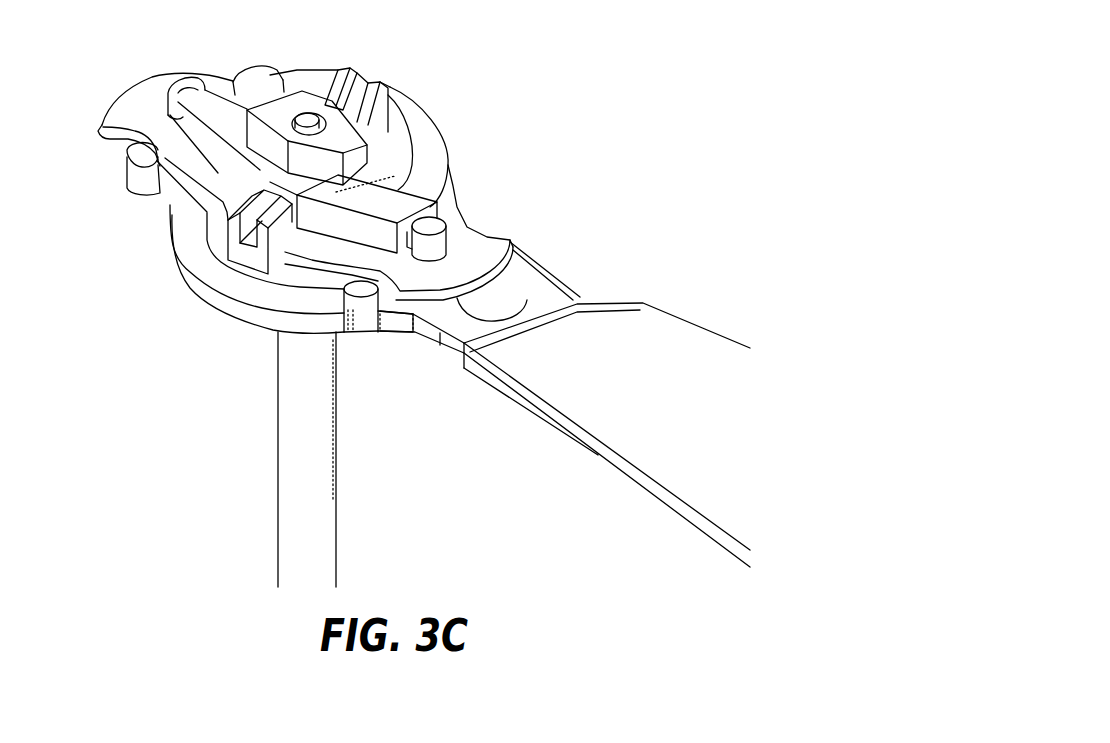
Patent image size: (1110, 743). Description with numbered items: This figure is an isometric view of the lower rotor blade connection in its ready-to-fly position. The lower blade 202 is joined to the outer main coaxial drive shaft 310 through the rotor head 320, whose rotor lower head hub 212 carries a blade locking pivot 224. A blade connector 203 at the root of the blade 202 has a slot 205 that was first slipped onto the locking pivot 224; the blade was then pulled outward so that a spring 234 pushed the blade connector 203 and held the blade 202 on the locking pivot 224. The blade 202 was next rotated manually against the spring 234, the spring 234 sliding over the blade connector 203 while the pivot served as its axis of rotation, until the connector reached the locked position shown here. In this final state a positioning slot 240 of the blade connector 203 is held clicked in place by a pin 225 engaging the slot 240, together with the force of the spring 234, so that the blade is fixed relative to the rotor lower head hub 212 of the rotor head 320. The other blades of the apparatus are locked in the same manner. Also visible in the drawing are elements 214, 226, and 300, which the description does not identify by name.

The top plate left portion 214 is at (105, 137).
The cylindrical boss 226 is at (150, 187).
The rotor head 320 is at (420, 108).
The rotor lower head hub 212 is at (495, 240).
The slot 205 is at (492, 312).
The blade 202 is at (686, 321).
The blade connector 203 is at (424, 333).
The spring 234 is at (260, 313).
The pin 225 is at (353, 332).
The locking pivot 224 is at (422, 330).
The positioning slot 240 is at (359, 326).
The outer main coaxial drive shaft 310 is at (293, 430).
The shaft line 300 is at (338, 505).